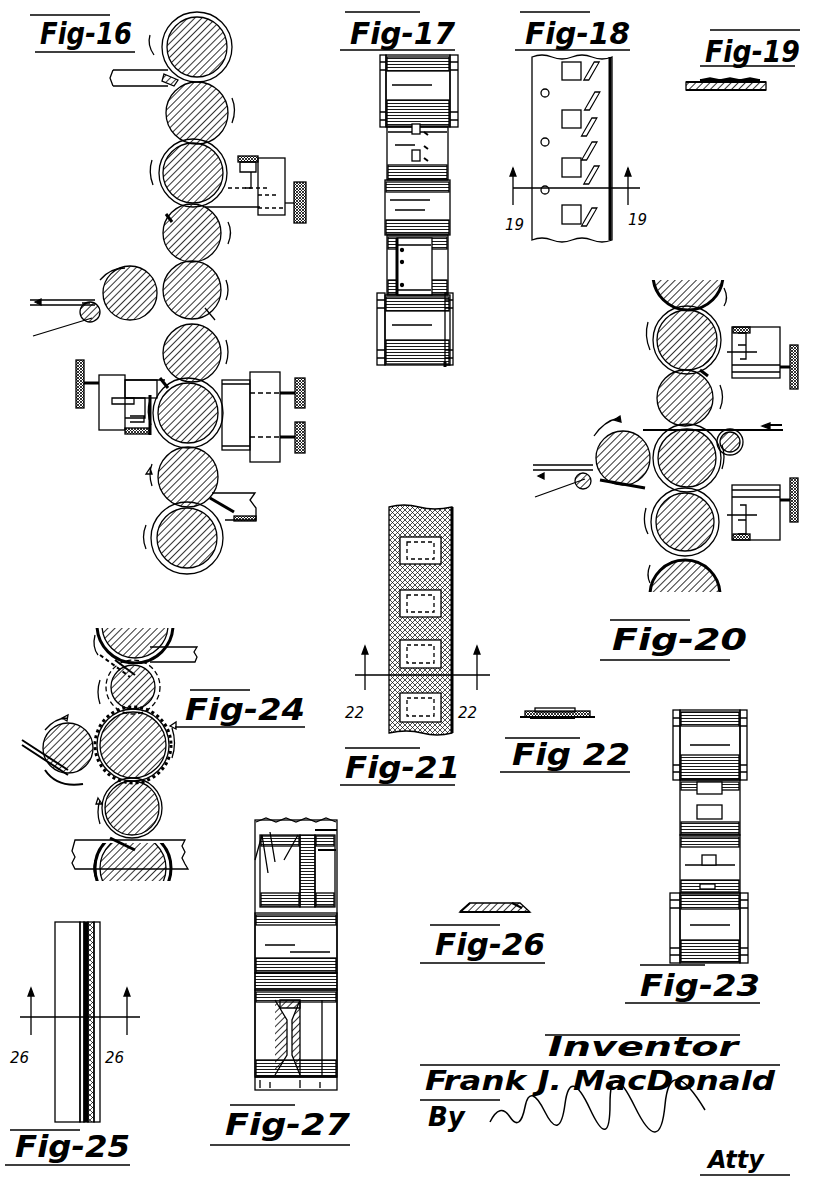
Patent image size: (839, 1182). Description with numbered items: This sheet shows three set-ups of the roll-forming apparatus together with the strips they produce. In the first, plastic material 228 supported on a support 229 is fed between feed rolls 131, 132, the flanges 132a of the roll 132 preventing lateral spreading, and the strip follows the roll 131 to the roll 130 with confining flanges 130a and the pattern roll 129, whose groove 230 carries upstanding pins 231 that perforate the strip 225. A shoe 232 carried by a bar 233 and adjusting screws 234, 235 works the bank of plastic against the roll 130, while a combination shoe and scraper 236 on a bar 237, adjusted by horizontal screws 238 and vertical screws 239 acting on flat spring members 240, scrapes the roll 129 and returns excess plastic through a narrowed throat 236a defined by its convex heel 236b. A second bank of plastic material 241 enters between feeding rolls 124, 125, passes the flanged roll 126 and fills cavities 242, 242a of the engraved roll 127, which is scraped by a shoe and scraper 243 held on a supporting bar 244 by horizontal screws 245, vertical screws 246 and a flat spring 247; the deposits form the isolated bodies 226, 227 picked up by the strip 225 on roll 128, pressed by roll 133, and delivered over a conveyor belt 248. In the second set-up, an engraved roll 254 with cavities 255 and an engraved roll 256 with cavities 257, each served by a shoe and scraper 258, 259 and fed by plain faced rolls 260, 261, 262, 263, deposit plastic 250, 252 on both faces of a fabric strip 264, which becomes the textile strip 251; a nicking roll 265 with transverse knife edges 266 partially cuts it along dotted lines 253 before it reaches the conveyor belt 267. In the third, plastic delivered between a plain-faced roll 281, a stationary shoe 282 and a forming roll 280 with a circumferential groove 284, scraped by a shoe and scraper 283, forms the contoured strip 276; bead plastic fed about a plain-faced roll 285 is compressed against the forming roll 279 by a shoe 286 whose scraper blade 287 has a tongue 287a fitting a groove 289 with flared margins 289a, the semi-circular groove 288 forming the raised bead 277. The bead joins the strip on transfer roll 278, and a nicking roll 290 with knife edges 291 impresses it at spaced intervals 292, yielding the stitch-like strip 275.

In FIG. 16, the feeding roll 124 is at (222, 40).
In FIG. 16, the feeding roll 125 is at (168, 121).
In FIG. 16, the flanged roll 126 is at (222, 150).
In FIG. 17, the flanged roll 126 is at (440, 88).
In FIG. 16, the engraved roll 127 is at (170, 206).
In FIG. 17, the engraved roll 127 is at (393, 150).
In FIG. 16, the roll 128 is at (214, 276).
In FIG. 17, the roll 128 is at (437, 205).
In FIG. 16, the pattern roll 129 is at (206, 343).
In FIG. 17, the pattern roll 129 is at (440, 270).
In FIG. 16, the roll 130 is at (200, 392).
In FIG. 17, the roll 130 is at (437, 318).
In FIG. 17, the confining flanges 130a is at (446, 366).
In FIG. 16, the feed roll 131 is at (220, 474).
In FIG. 16, the feed roll 132 is at (214, 540).
In FIG. 16, the flanges 132a is at (207, 573).
In FIG. 16, the roll 133 is at (148, 265).
In FIG. 16, the strip 225 is at (220, 312).
In FIG. 18, the strip 225 is at (598, 130).
In FIG. 19, the strip 225 is at (748, 90).
In FIG. 18, the isolated bodies 226 is at (582, 68).
In FIG. 19, the isolated bodies 226 is at (735, 82).
In FIG. 18, the isolated bodies 227 is at (608, 100).
In FIG. 19, the isolated bodies 227 is at (748, 82).
In FIG. 16, the plastic material 228 is at (240, 497).
In FIG. 16, the support 229 is at (246, 522).
In FIG. 17, the groove 230 is at (425, 255).
In FIG. 17, the upstanding pins 231 is at (397, 265).
In FIG. 16, the shoe 232 is at (272, 374).
In FIG. 16, the bar 233 is at (306, 386).
In FIG. 16, the adjusting screw 234 is at (294, 398).
In FIG. 16, the adjusting screw 235 is at (306, 440).
In FIG. 16, the combination shoe and scraper 236 is at (156, 362).
In FIG. 16, the narrowed throat 236a is at (152, 440).
In FIG. 16, the convex heel 236b is at (165, 382).
In FIG. 16, the bar 237 is at (100, 406).
In FIG. 16, the horizontal screws 238 is at (76, 385).
In FIG. 16, the vertical screws 239 is at (137, 436).
In FIG. 16, the flat spring members 240 is at (122, 412).
In FIG. 16, the second bank of plastic material 241 is at (175, 77).
In FIG. 16, the cavities 242 is at (166, 219).
In FIG. 17, the cavities 242 is at (428, 130).
In FIG. 17, the cavities 242a is at (430, 150).
In FIG. 16, the combination shoe and scraper 243 is at (236, 200).
In FIG. 16, the supporting bar 244 is at (286, 182).
In FIG. 16, the horizontal screws 245 is at (306, 204).
In FIG. 16, the vertical screws 246 is at (248, 157).
In FIG. 16, the flat spring 247 is at (262, 182).
In FIG. 16, the conveyor belt 248 is at (45, 336).
In FIG. 21, the separated deposits of plastic material 250 is at (437, 555).
In FIG. 22, the separated deposits of plastic material 250 is at (548, 710).
In FIG. 21, the strip of textile material 251 is at (440, 605).
In FIG. 22, the strip of textile material 251 is at (592, 712).
In FIG. 21, the separated deposits 252 is at (435, 660).
In FIG. 22, the separated deposits 252 is at (538, 720).
In FIG. 21, the dotted lines 253 is at (447, 573).
In FIG. 20, the engraved roll 254 is at (660, 396).
In FIG. 23, the engraved roll 254 is at (680, 798).
In FIG. 20, the cavities 255 is at (660, 385).
In FIG. 23, the cavities 255 is at (712, 790).
In FIG. 20, the engraved roll 256 is at (720, 458).
In FIG. 23, the engraved roll 256 is at (680, 858).
In FIG. 20, the cavities 257 is at (652, 490).
In FIG. 23, the cavities 257 is at (717, 860).
In FIG. 20, the combined shoe and scraper blade 258 is at (730, 372).
In FIG. 20, the scraper shoe 259 is at (735, 490).
In FIG. 20, the plain faced roll 260 is at (718, 330).
In FIG. 23, the plain faced roll 260 is at (720, 722).
In FIG. 20, the plain faced roll 261 is at (705, 282).
In FIG. 20, the plain faced roll 262 is at (712, 536).
In FIG. 23, the plain faced roll 262 is at (680, 920).
In FIG. 20, the plain faced roll 263 is at (712, 585).
In FIG. 20, the strip of fabric 264 is at (742, 430).
In FIG. 20, the nicking roll 265 is at (600, 456).
In FIG. 20, the transverse knife edges 266 is at (634, 424).
In FIG. 20, the conveyor belt 267 is at (535, 495).
In FIG. 24, the strip 275 is at (25, 738).
In FIG. 25, the strip 275 is at (100, 946).
In FIG. 26, the strip 275 is at (480, 904).
In FIG. 24, the contoured strip 276 is at (170, 745).
In FIG. 25, the contoured strip 276 is at (70, 922).
In FIG. 26, the contoured strip 276 is at (530, 910).
In FIG. 27, the contoured strip 276 is at (300, 990).
In FIG. 25, the raised bead 277 is at (97, 922).
In FIG. 26, the raised bead 277 is at (516, 905).
In FIG. 27, the raised bead 277 is at (322, 820).
In FIG. 24, the plain-faced roll 278 is at (170, 770).
In FIG. 27, the plain-faced roll 278 is at (325, 935).
In FIG. 24, the forming roll 279 is at (158, 704).
In FIG. 27, the forming roll 279 is at (330, 850).
In FIG. 24, the forming roll 280 is at (160, 818).
In FIG. 27, the forming roll 280 is at (325, 1020).
In FIG. 24, the plain-faced roll 281 is at (156, 882).
In FIG. 24, the stationary shoe 282 is at (185, 858).
In FIG. 24, the combined shoe and scraper blade 283 is at (110, 840).
In FIG. 27, the combined shoe and scraper blade 283 is at (335, 1086).
In FIG. 24, the circumferential groove 284 is at (160, 806).
In FIG. 27, the circumferential groove 284 is at (285, 1025).
In FIG. 24, the plain-faced roll 285 is at (132, 627).
In FIG. 24, the combined shoe and scraper 286 is at (172, 650).
In FIG. 24, the scraper blade 287 is at (160, 684).
In FIG. 27, the scraper blade 287 is at (335, 826).
In FIG. 27, the tongue 287a is at (335, 862).
In FIG. 24, the circumferential groove 288 is at (100, 657).
In FIG. 27, the circumferential groove 288 is at (315, 868).
In FIG. 24, the circumferential groove 289 is at (112, 675).
In FIG. 27, the circumferential groove 289 is at (273, 860).
In FIG. 27, the flared margins 289a is at (290, 832).
In FIG. 24, the nicking roll 290 is at (68, 776).
In FIG. 24, the knife edges 291 is at (75, 728).
In FIG. 25, the spaced intervals 292 is at (92, 1078).